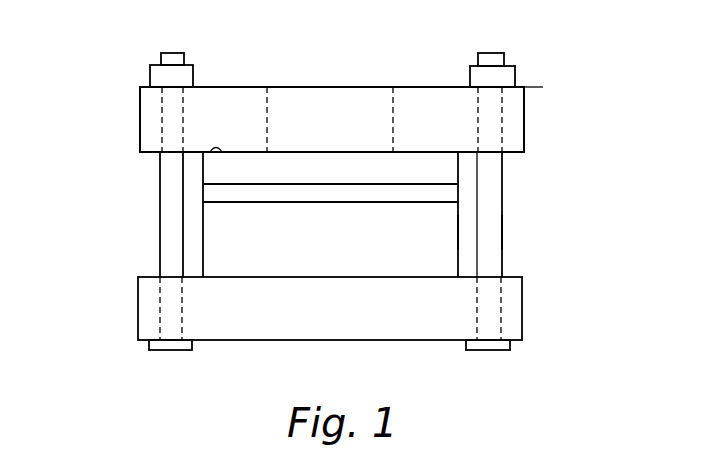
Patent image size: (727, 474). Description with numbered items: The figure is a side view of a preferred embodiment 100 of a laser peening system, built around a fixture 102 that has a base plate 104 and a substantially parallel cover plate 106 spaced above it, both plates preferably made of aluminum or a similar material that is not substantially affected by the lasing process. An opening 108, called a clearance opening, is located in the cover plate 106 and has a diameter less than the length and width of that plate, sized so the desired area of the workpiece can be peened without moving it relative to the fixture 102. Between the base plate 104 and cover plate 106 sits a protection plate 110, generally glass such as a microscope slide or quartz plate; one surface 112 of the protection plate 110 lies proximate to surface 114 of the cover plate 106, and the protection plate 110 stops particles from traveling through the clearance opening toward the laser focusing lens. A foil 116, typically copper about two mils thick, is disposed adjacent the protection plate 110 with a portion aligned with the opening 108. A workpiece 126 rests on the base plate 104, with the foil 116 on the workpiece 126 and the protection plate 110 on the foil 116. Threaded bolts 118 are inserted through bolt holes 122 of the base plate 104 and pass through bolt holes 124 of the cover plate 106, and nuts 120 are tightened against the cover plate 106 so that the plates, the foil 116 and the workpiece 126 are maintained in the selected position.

The preferred embodiment 100 is at (645, 24).
The fixture 102 is at (524, 120).
The base plate 104 is at (223, 327).
The cover plate 106 is at (150, 118).
The opening 108 is at (267, 128).
The protection plate 110 is at (448, 172).
The surface 112 is at (207, 155).
The surface 114 is at (150, 155).
The foil 116 is at (448, 193).
The threaded bolts 118 is at (170, 352).
The nuts 120 is at (187, 80).
The bolt holes 122 is at (160, 304).
The bolt holes 124 is at (183, 142).
The workpiece 126 is at (445, 232).